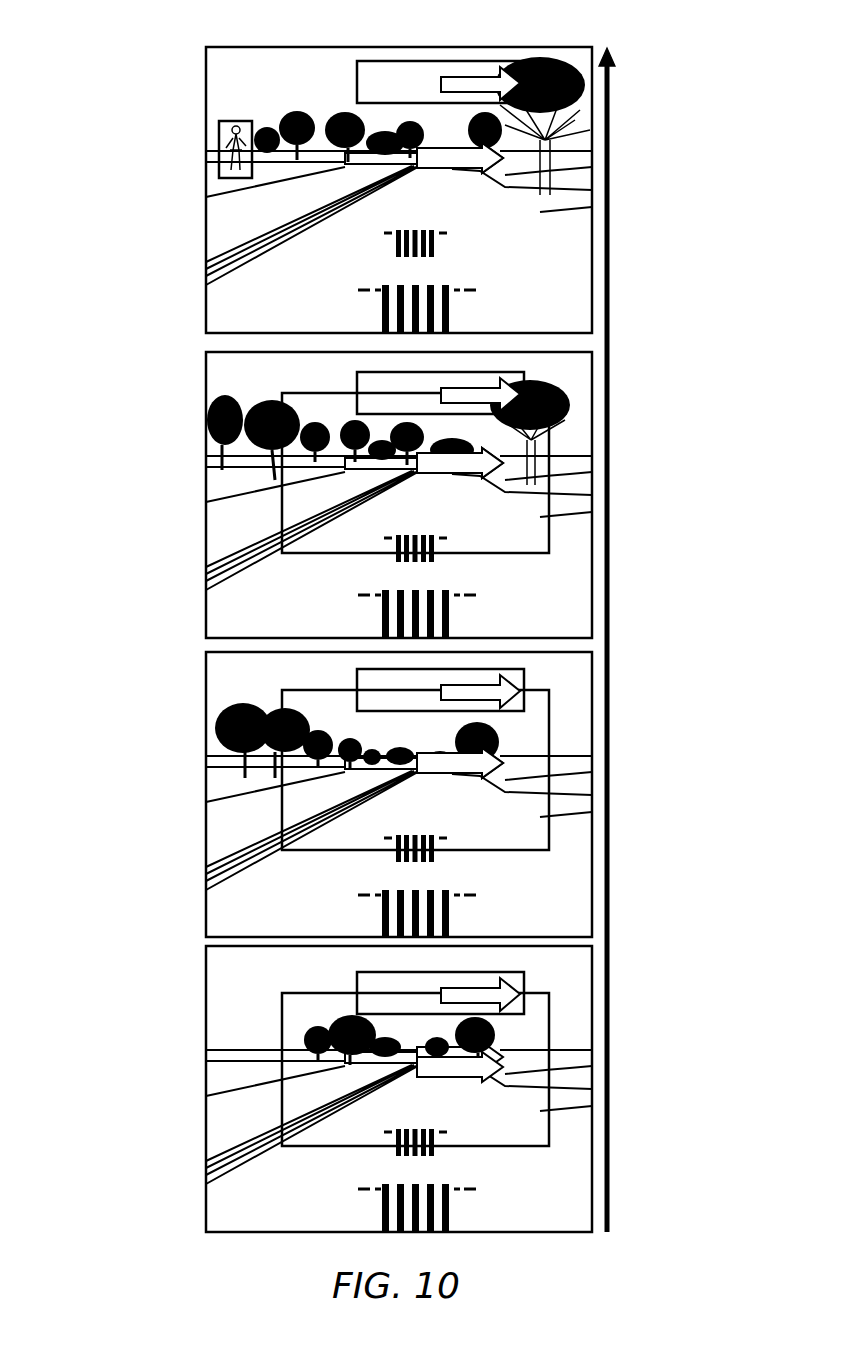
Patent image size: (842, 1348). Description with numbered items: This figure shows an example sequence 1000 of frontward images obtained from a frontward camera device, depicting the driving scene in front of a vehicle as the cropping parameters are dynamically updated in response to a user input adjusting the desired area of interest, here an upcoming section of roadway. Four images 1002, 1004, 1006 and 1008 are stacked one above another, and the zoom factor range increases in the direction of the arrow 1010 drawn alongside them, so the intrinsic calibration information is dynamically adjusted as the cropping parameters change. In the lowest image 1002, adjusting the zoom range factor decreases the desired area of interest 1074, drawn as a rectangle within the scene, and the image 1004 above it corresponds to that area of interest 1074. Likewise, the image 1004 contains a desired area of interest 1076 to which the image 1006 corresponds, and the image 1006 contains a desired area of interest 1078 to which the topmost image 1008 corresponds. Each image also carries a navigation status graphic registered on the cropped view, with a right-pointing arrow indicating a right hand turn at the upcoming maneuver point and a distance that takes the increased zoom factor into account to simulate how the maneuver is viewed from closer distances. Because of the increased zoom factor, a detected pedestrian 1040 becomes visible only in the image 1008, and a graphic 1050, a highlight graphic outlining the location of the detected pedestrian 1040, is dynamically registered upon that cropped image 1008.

The sequence of display views 1000 is at (170, 100).
The image 1002 is at (203, 1105).
The image 1004 is at (203, 807).
The image 1006 is at (203, 507).
The image 1008 is at (203, 200).
The arrow 1010 is at (610, 628).
The detected pedestrian 1040 is at (249, 120).
The graphic 1050 is at (218, 121).
The desired area of interest 1074 is at (551, 1130).
The desired area of interest 1076 is at (551, 838).
The desired area of interest 1078 is at (551, 540).